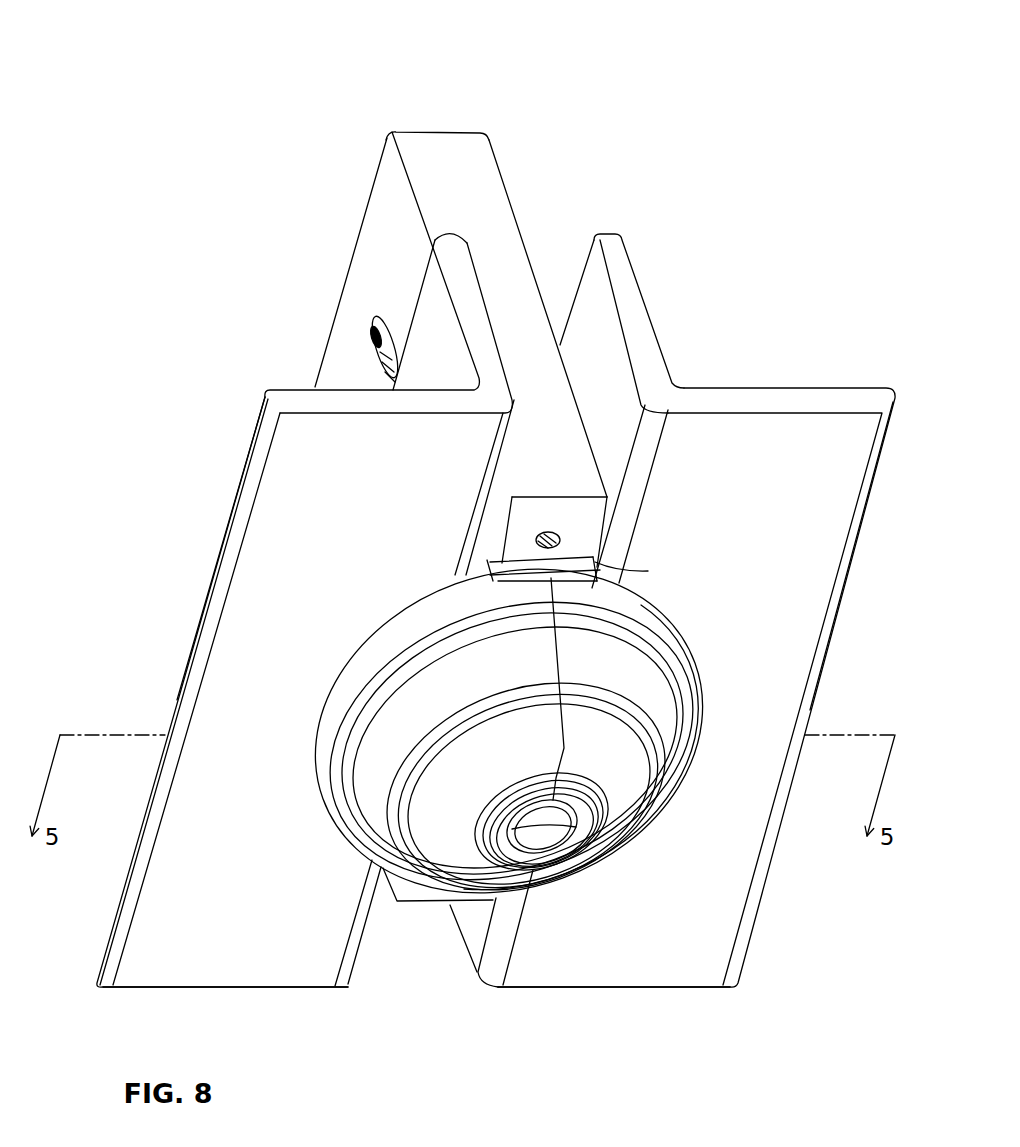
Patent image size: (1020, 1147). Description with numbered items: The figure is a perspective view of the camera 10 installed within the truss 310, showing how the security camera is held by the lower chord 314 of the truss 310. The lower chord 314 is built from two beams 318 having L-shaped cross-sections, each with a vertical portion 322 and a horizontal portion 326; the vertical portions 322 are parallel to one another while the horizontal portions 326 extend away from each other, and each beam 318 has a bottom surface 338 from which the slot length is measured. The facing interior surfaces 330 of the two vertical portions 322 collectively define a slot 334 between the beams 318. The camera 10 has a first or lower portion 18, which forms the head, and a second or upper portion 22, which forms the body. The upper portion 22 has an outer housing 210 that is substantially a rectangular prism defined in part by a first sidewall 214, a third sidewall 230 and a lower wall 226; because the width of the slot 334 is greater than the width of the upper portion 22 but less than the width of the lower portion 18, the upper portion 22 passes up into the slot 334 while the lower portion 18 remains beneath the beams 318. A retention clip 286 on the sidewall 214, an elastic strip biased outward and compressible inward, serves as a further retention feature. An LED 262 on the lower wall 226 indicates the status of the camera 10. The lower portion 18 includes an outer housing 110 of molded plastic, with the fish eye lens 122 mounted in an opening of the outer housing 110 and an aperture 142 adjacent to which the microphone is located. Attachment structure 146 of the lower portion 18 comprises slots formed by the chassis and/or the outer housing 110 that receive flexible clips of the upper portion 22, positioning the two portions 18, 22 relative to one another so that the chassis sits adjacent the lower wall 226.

The camera 10 is at (478, 73).
The upper portion 22 is at (331, 262).
The outer housing 210 is at (491, 177).
The first sidewall 214 is at (380, 215).
The third sidewall 230 is at (496, 226).
The retention clip 286 is at (386, 330).
The vertical portion 322 is at (463, 290).
The slot 334 is at (583, 309).
The truss 310 is at (722, 250).
The lower chord 314 is at (735, 303).
The interior surface 330 is at (612, 386).
The beam 318 is at (846, 392).
The horizontal portion 326 is at (838, 508).
The bottom surface 338 is at (268, 968).
The LED 262 is at (548, 530).
The lower wall 226 is at (576, 520).
The attachment structure 146 is at (633, 575).
The lower portion 18 is at (692, 600).
The outer housing 110 is at (386, 650).
The aperture 142 is at (566, 738).
The lens 122 is at (545, 830).